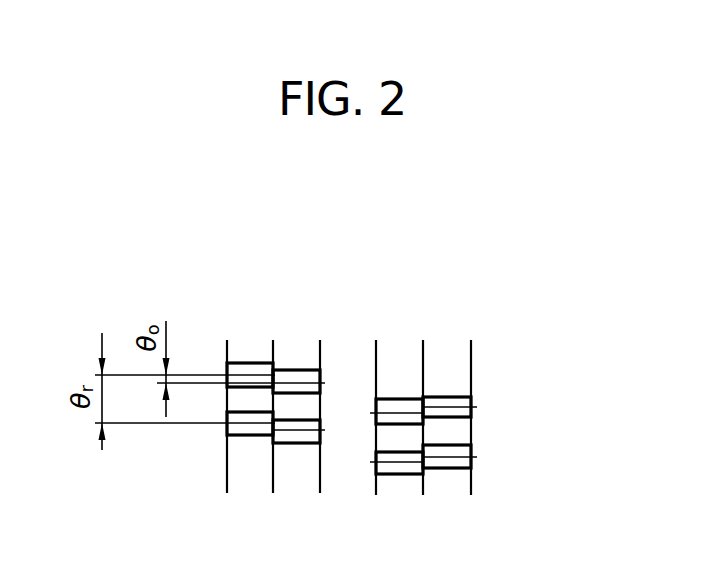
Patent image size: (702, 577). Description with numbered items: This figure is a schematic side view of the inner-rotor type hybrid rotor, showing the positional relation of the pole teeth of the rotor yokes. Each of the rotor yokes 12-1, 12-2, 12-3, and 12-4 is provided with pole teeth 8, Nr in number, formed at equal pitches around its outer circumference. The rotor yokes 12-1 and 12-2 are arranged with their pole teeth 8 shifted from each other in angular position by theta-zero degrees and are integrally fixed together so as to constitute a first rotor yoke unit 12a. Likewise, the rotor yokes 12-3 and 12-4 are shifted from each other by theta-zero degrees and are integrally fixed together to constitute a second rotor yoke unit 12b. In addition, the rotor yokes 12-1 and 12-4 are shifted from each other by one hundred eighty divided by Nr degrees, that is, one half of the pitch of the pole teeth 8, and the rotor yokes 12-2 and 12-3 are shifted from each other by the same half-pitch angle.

The pole teeth 8 is at (298, 372).
The rotor yoke 12-1 is at (250, 290).
The rotor yoke 12-2 is at (297, 290).
The rotor yoke 12-3 is at (400, 290).
The rotor yoke 12-4 is at (447, 290).
The first rotor yoke unit 12a is at (213, 497).
The second rotor yoke unit 12b is at (368, 497).